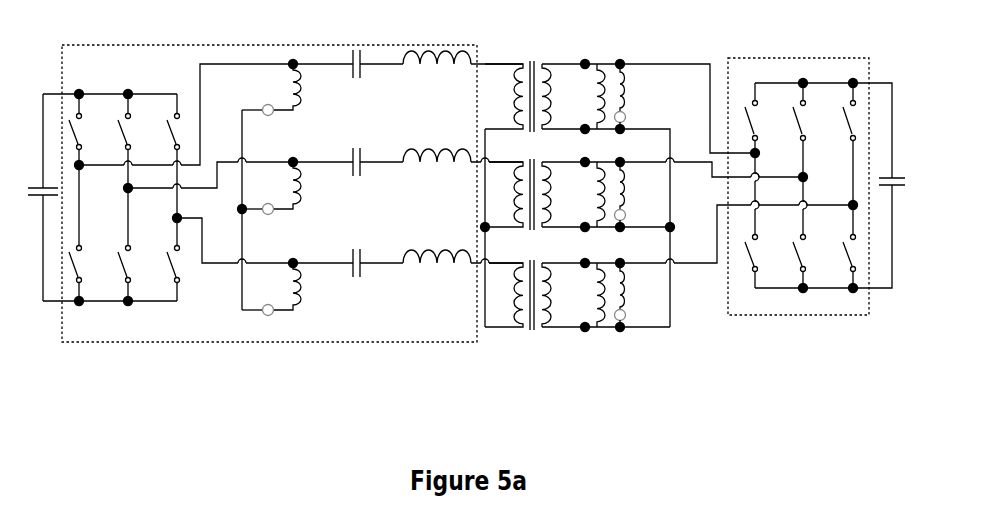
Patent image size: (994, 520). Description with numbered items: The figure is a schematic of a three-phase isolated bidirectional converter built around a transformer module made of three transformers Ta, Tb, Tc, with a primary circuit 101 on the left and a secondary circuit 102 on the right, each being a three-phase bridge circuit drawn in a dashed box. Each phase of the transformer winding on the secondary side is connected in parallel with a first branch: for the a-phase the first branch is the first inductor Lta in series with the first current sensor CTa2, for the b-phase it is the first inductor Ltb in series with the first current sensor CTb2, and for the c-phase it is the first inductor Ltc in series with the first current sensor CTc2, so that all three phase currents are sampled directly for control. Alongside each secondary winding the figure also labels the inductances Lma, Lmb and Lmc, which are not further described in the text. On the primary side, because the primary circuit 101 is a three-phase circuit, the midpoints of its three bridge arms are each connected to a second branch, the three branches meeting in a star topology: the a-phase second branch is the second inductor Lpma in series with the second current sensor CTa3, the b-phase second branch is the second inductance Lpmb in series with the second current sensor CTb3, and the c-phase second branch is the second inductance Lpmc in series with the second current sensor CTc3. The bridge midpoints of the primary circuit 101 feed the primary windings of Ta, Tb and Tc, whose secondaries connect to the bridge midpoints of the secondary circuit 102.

The primary circuit 101 is at (479, 53).
The secondary circuit 102 is at (773, 58).
The transformer Ta is at (552, 88).
The transformer Tb is at (552, 187).
The transformer Tc is at (552, 287).
The phase-a magnetizing inductance Lma is at (580, 96).
The phase-b magnetizing inductance Lmb is at (580, 194).
The phase-c magnetizing inductance Lmc is at (580, 295).
The first inductor Lta is at (636, 87).
The first inductor Ltb is at (636, 185).
The first inductor Ltc is at (635, 286).
The second inductor Lpma is at (277, 87).
The second inductance Lpmb is at (277, 185).
The second inductance Lpmc is at (277, 286).
The first current sensor CTa2 is at (641, 120).
The first current sensor CTb2 is at (643, 217).
The first current sensor CTc2 is at (641, 318).
The second current sensor CTa3 is at (267, 123).
The second current sensor CTb3 is at (268, 221).
The second current sensor CTc3 is at (263, 321).